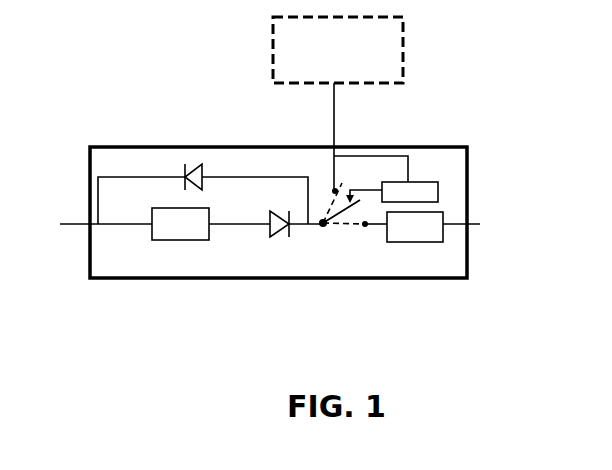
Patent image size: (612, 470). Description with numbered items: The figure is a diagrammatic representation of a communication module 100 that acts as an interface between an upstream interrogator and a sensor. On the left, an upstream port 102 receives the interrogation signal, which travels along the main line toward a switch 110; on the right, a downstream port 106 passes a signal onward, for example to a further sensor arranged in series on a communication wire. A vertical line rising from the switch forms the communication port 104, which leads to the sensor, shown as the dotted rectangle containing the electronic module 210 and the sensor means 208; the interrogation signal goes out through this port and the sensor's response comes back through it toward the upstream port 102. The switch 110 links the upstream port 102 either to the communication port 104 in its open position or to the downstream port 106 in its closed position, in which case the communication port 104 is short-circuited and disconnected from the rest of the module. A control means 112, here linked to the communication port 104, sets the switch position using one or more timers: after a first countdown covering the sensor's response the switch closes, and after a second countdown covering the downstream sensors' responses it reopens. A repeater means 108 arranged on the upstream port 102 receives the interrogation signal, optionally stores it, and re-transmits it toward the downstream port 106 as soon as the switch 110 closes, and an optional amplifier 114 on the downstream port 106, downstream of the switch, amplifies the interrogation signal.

The communication module 100 is at (128, 127).
The upstream port 102 is at (70, 224).
The communication port 104 is at (334, 116).
The downstream port 106 is at (469, 214).
The repeater means 108 is at (176, 240).
The switch 110 is at (347, 206).
The control means 112 is at (428, 181).
The amplifier 114 is at (437, 243).
The sensor means 208 is at (338, 50).
The electronic module 210 is at (338, 50).